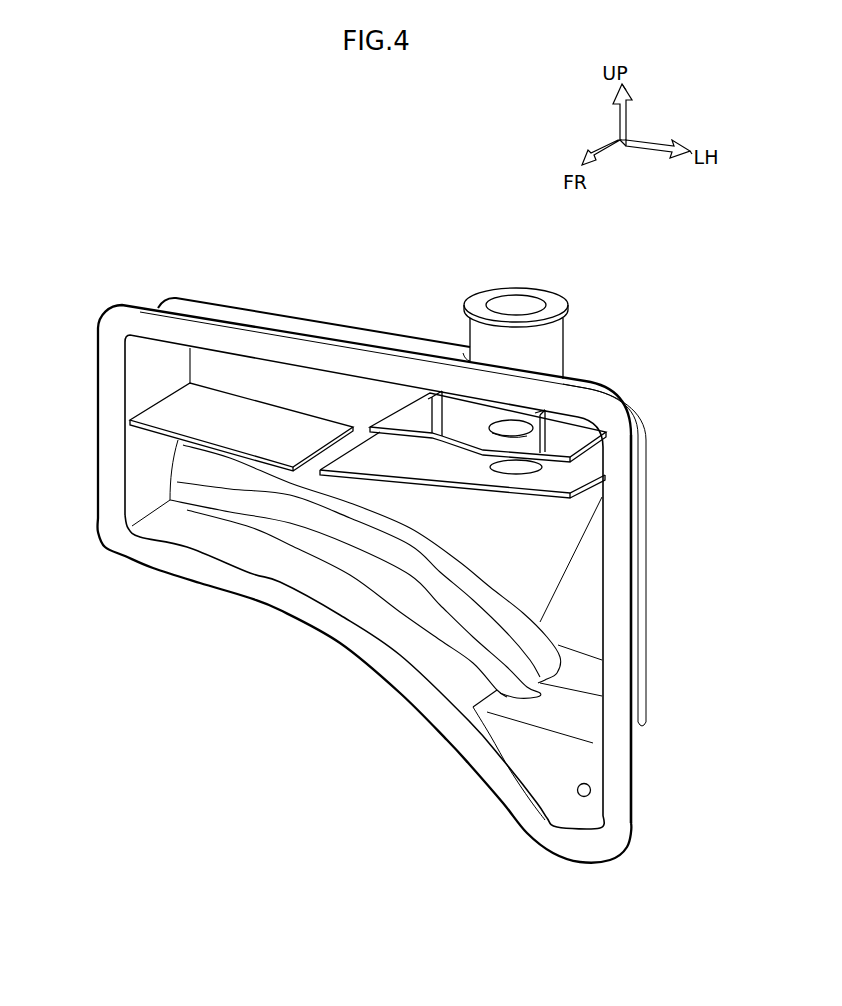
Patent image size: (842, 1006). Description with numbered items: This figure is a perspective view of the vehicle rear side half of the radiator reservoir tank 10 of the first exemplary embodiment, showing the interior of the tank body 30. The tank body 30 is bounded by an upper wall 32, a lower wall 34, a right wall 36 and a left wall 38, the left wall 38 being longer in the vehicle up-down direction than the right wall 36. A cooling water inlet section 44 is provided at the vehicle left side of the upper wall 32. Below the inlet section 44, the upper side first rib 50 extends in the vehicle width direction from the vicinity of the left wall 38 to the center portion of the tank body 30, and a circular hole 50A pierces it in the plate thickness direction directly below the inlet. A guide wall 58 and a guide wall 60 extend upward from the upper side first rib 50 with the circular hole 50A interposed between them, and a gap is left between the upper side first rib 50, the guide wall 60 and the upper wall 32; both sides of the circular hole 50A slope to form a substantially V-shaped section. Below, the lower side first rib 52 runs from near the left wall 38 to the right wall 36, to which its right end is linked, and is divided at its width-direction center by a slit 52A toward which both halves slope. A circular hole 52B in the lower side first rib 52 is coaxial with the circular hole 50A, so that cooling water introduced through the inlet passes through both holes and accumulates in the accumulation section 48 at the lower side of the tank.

The vehicle structure 10 is at (392, 508).
The tank body 30 is at (160, 290).
The upper wall 32 is at (262, 311).
The lower wall 34 is at (358, 603).
The right wall 36 is at (148, 465).
The left wall 38 is at (647, 550).
The cooling water inlet section 44 is at (564, 342).
The accumulation section 48 is at (538, 568).
The upper side first rib 50 is at (393, 398).
The circular hole 50A is at (522, 433).
The lower side first rib 52 is at (360, 485).
The slit 52A is at (368, 426).
The circular hole 52B is at (548, 466).
The guide wall 58 is at (567, 427).
The guide wall 60 is at (421, 405).